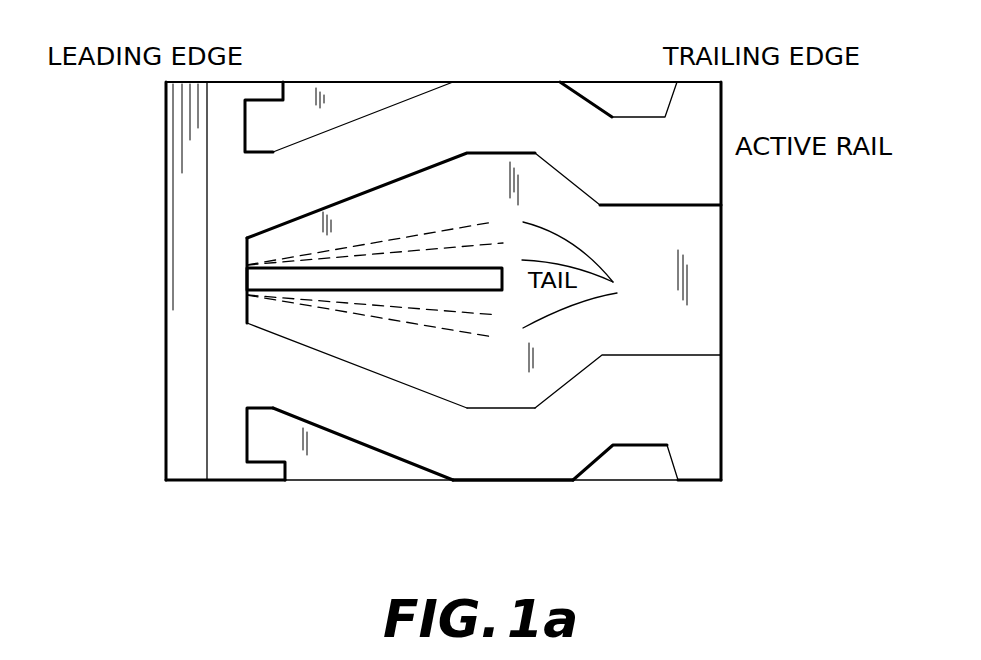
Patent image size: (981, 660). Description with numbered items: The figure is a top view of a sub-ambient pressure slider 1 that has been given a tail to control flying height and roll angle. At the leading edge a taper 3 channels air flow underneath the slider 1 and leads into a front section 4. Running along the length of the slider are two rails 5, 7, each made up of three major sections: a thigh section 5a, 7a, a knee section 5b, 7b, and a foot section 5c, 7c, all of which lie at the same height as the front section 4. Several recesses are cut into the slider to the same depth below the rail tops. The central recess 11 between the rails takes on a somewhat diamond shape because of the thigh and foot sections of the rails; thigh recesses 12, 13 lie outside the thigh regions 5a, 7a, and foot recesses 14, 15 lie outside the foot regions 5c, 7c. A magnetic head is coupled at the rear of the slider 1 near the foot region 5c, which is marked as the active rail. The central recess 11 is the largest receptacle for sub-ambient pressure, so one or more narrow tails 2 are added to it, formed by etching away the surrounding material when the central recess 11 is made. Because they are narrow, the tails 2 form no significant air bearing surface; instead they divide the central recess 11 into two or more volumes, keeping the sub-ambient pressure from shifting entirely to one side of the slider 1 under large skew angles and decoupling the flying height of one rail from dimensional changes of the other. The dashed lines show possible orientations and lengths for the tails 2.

The slider 1 is at (122, 210).
The tail 2 is at (493, 268).
The taper 3 is at (165, 140).
The front section 4 is at (218, 482).
The rail 5 is at (420, 95).
The thigh section 5a is at (325, 133).
The knee section 5b is at (487, 82).
The foot section 5c is at (697, 206).
The rail 7 is at (577, 478).
The thigh section 7a is at (373, 367).
The knee section 7b is at (518, 403).
The foot section 7c is at (683, 353).
The central recess 11 is at (467, 279).
The thigh recess 12 is at (338, 92).
The thigh recess 13 is at (328, 470).
The foot recess 14 is at (637, 93).
The foot recess 15 is at (633, 470).